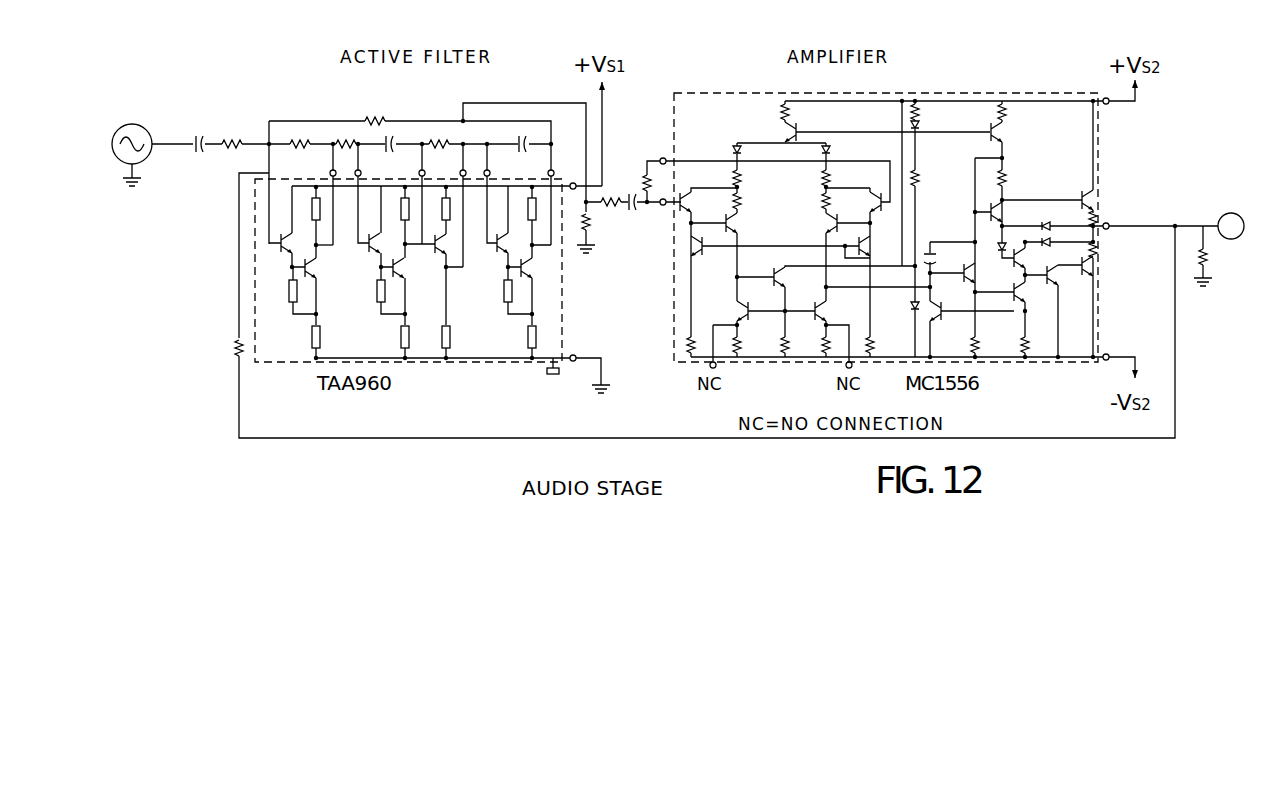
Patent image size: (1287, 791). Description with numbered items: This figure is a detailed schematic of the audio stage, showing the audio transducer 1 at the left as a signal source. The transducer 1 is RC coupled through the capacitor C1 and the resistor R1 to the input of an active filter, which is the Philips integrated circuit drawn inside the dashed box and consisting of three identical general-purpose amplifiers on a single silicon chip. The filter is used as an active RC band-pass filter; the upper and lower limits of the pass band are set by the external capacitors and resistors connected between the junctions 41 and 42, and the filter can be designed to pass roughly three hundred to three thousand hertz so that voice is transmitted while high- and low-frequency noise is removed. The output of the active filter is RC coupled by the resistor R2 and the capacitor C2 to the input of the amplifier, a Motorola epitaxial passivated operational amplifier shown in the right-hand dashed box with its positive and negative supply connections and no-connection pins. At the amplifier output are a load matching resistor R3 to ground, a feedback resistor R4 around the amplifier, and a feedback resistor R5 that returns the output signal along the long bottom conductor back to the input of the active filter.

The audio transducer 1 is at (112, 150).
The capacitor C1 is at (197, 154).
The resistor R1 is at (244, 122).
The junction 41 is at (279, 167).
The junction 42 is at (551, 144).
The capacitor C2 is at (630, 186).
The feedback resistor R4 is at (650, 179).
The resistor R2 is at (592, 218).
The feedback resistor R5 is at (234, 353).
The load matching resistor R3 is at (1211, 258).